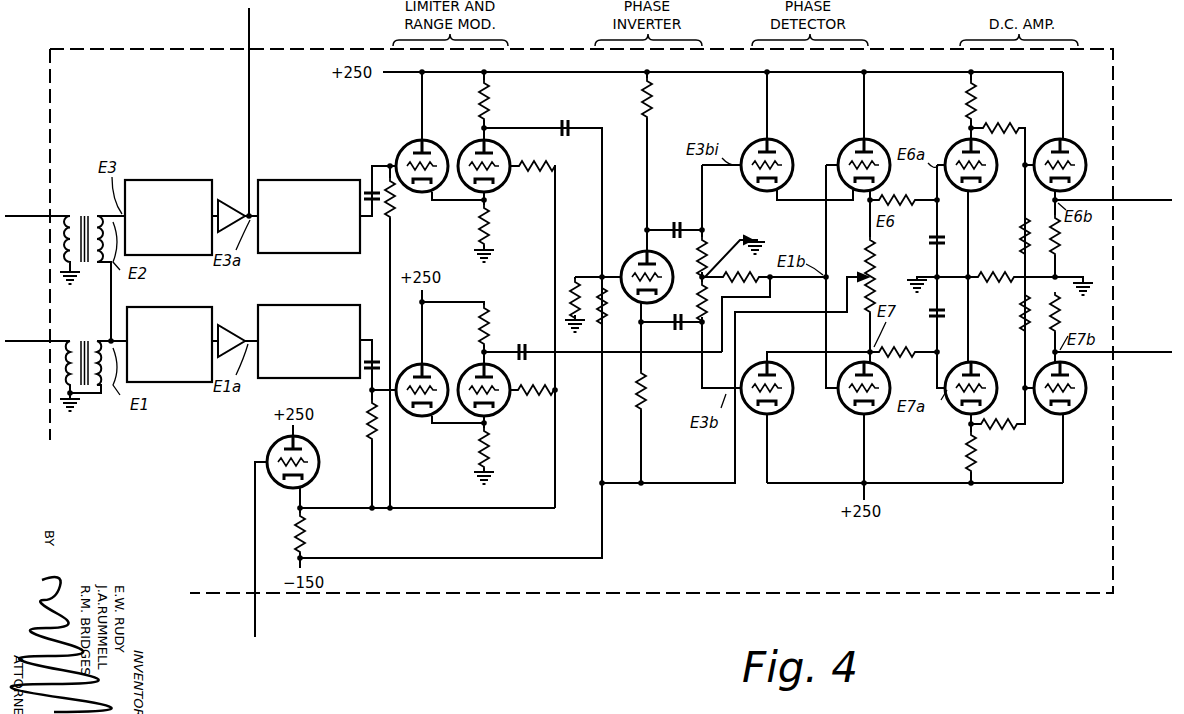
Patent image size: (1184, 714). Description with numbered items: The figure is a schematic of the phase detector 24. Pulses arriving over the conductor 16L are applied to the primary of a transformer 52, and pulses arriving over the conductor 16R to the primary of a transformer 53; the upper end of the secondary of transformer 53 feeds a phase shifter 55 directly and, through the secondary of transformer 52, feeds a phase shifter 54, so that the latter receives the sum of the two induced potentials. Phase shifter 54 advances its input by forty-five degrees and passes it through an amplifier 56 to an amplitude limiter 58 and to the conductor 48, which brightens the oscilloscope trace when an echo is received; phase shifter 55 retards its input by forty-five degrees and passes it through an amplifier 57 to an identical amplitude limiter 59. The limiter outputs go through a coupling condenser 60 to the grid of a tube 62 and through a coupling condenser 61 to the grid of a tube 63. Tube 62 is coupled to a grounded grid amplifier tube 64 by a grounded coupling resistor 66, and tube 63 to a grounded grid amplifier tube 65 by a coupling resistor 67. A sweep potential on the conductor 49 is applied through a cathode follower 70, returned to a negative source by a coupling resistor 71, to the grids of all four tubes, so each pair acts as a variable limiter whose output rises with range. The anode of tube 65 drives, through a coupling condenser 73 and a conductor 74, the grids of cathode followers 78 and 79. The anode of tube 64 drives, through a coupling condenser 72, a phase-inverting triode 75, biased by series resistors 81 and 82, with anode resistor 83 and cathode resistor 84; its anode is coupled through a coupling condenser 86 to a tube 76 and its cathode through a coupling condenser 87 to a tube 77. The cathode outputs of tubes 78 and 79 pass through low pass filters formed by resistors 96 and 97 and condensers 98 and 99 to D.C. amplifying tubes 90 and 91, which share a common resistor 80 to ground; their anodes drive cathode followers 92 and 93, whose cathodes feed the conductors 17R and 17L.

The conductor 16L is at (36, 216).
The conductor 16R is at (36, 341).
The conductor 17L is at (1117, 203).
The conductor 17R is at (1117, 352).
The phase detector 24 is at (638, 594).
The conductor 48 is at (250, 33).
The conductor 49 is at (256, 623).
The transformer 52 is at (76, 212).
The transformer 53 is at (88, 399).
The phase shifter 54 is at (158, 180).
The phase shifter 55 is at (166, 307).
The amplifier 56 is at (228, 200).
The amplifier 57 is at (230, 325).
The amplitude limiter 58 is at (296, 177).
The amplitude limiter 59 is at (294, 302).
The coupling condenser 60 is at (368, 192).
The coupling condenser 61 is at (366, 376).
The tube 62 is at (404, 146).
The tube 63 is at (426, 416).
The grounded grid amplifier tube 64 is at (468, 146).
The grounded grid amplifier tube 65 is at (499, 411).
The coupling resistor 66 is at (488, 206).
The coupling resistor 67 is at (489, 460).
The cathode follower 70 is at (320, 444).
The coupling resistor 71 is at (305, 543).
The coupling condenser 72 is at (563, 120).
The coupling condenser 73 is at (522, 345).
The conductor 74 is at (581, 355).
The phase-inverting triode 75 is at (637, 257).
The tube 76 is at (751, 148).
The tube 77 is at (761, 367).
The cathode follower 78 is at (845, 148).
The cathode follower 79 is at (845, 410).
The common resistor 80 is at (990, 274).
The series resistor 81 is at (606, 318).
The series resistor 82 is at (573, 290).
The coupling resistor 83 is at (652, 103).
The coupling resistor 84 is at (647, 383).
The coupling condenser 86 is at (678, 222).
The coupling condenser 87 is at (675, 330).
The D.C. amplifying tube 90 is at (953, 146).
The D.C. amplifying tube 91 is at (960, 411).
The cathode follower 92 is at (1049, 141).
The cathode follower 93 is at (1053, 416).
The resistor 96 is at (898, 196).
The resistor 97 is at (903, 358).
The condenser 98 is at (930, 242).
The condenser 99 is at (932, 316).